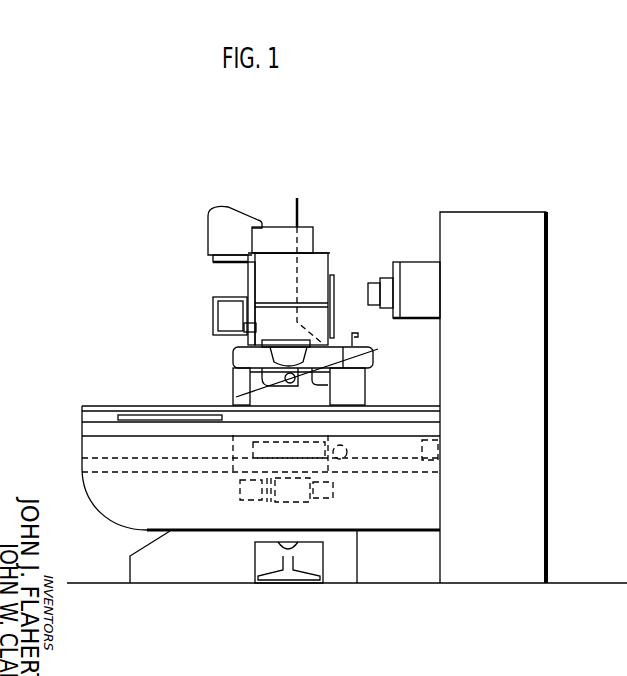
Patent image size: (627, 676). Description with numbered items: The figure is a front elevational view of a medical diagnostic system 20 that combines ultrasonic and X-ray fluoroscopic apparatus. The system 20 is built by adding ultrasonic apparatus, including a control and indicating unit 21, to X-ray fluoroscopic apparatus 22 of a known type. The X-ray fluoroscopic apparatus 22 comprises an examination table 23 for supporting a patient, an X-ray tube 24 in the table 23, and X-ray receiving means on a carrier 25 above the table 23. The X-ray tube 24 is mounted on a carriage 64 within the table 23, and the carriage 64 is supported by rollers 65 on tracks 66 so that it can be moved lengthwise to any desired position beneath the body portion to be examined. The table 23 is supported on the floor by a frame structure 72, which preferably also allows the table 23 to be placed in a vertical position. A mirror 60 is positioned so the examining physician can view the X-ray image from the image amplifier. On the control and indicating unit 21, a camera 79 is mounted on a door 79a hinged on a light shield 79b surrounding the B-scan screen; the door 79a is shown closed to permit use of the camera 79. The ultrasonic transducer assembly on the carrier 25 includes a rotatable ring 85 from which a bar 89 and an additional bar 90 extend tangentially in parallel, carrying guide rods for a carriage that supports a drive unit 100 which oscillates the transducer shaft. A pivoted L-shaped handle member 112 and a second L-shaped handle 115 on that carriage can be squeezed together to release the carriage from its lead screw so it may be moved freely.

The medical diagnostic system 20 is at (211, 271).
The control and indicating unit 21 is at (552, 275).
The X-ray fluoroscopic apparatus 22 is at (340, 313).
The examination table 23 is at (84, 404).
The X-ray tube 24 is at (305, 495).
The carrier 25 is at (228, 358).
The mirror 60 is at (214, 312).
The carriage 64 is at (355, 447).
The rollers 65 is at (225, 450).
The tracks 66 is at (150, 462).
The frame structure 72 is at (357, 560).
The camera 79 is at (366, 328).
The door 79a is at (383, 282).
The light shield 79b is at (413, 268).
The ring 85 is at (243, 380).
The bar 89 is at (373, 362).
The bar 90 is at (232, 371).
The drive unit 100 is at (276, 387).
The L-shaped handle member 112 is at (346, 345).
The L-shaped handle 115 is at (232, 344).